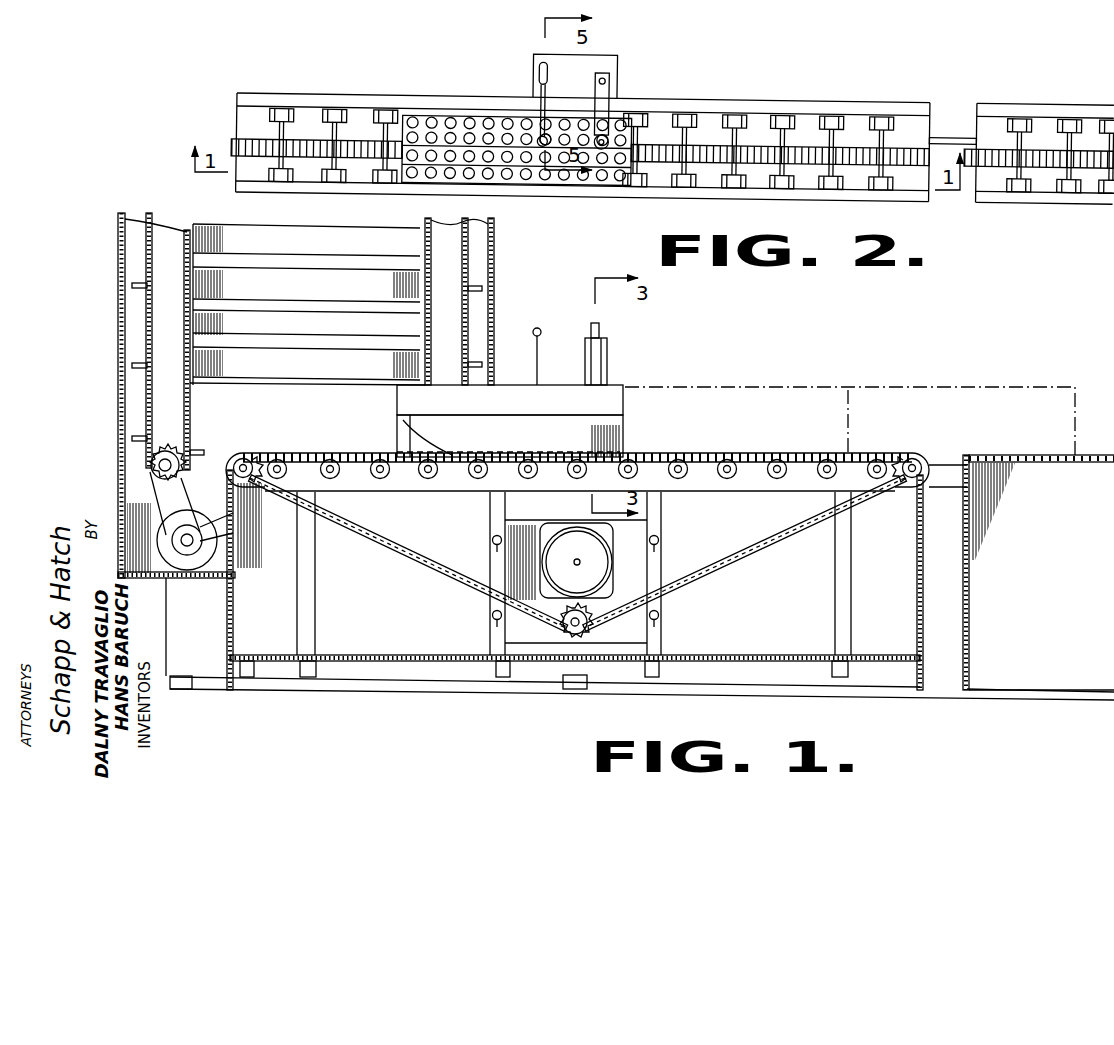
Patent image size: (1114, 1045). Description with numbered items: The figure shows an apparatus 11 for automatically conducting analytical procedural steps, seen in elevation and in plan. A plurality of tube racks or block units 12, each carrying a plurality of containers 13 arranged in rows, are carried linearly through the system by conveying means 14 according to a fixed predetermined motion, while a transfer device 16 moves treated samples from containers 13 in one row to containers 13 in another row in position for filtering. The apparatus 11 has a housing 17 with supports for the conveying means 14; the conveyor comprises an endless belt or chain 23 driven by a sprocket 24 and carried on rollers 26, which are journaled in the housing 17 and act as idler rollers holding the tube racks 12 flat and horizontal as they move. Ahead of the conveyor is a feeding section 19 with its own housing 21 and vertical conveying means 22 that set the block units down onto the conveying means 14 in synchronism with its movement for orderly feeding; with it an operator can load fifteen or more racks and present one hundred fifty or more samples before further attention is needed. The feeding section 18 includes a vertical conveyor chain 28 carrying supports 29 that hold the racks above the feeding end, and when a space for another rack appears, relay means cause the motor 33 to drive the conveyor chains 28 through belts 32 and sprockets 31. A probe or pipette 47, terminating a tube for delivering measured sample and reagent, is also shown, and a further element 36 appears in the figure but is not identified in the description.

In FIG. 2, the apparatus 11 is at (323, 92).
In FIG. 1, the apparatus 11 is at (866, 376).
In FIG. 2, the tube racks or block units 12 is at (516, 146).
In FIG. 1, the tube racks or block units 12 is at (623, 390).
In FIG. 2, the containers 13 is at (418, 132).
In FIG. 2, the conveying means 14 is at (232, 138).
In FIG. 1, the conveying means 14 is at (722, 452).
In FIG. 2, the transfer device 16 is at (614, 94).
In FIG. 1, the transfer device 16 is at (604, 344).
In FIG. 2, the housing 17 is at (908, 196).
In FIG. 1, the housing 17 is at (922, 614).
In FIG. 1, the feeding section 18 is at (310, 612).
In FIG. 1, the feeding section 19 is at (124, 212).
In FIG. 1, the housing 21 is at (148, 427).
In FIG. 1, the conveying means 22 is at (164, 212).
In FIG. 2, the endless belt or chain 23 is at (312, 158).
In FIG. 1, the endless belt or chain 23 is at (437, 573).
In FIG. 2, the sprocket 24 is at (244, 182).
In FIG. 1, the sprocket 24 is at (251, 480).
In FIG. 2, the rollers 26 is at (338, 108).
In FIG. 1, the rollers 26 is at (428, 480).
In FIG. 1, the vertical conveyor chain 28 is at (426, 222).
In FIG. 1, the supports 29 is at (202, 386).
In FIG. 1, the sprockets 31 is at (150, 471).
In FIG. 1, the belts 32 is at (190, 508).
In FIG. 1, the motor 33 is at (168, 543).
In FIG. 2, the pin 36 is at (540, 104).
In FIG. 1, the pin 36 is at (537, 341).
In FIG. 2, the probe or pipette 47 is at (541, 132).